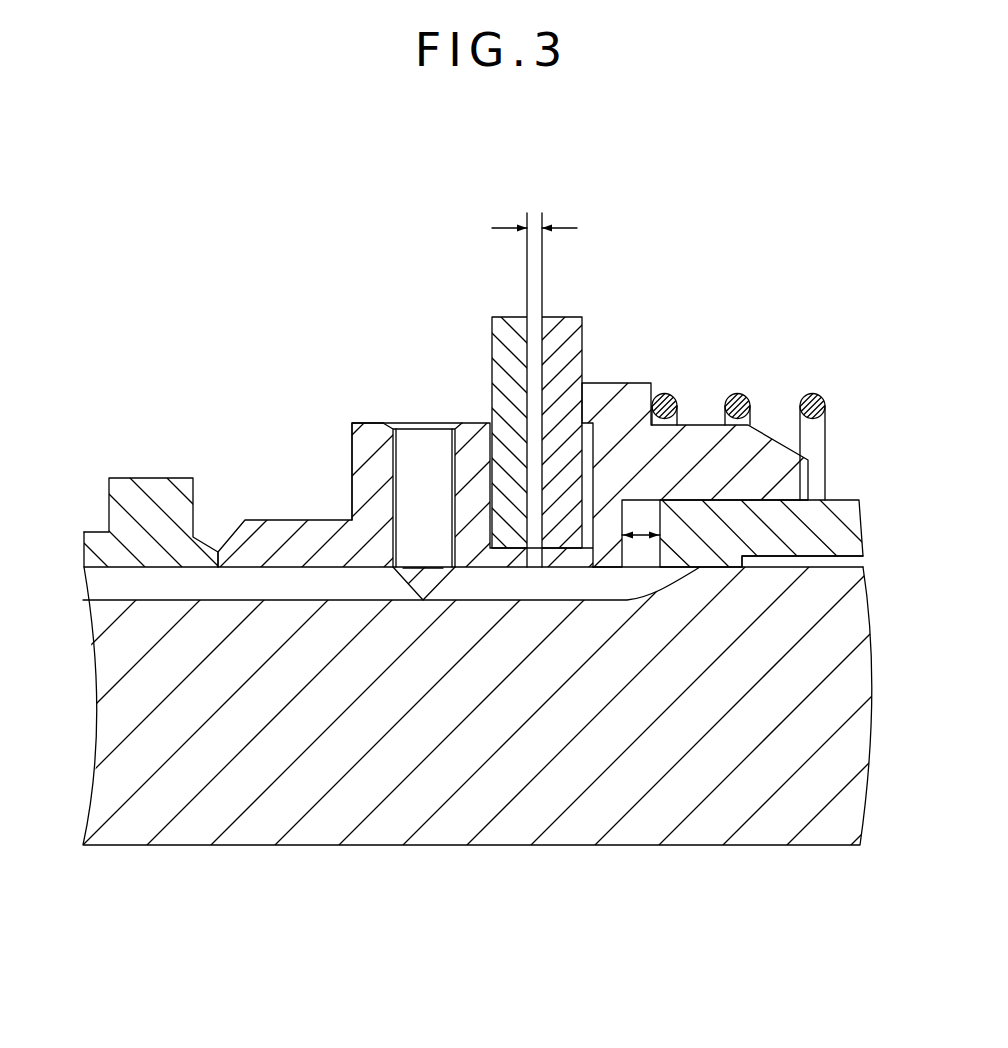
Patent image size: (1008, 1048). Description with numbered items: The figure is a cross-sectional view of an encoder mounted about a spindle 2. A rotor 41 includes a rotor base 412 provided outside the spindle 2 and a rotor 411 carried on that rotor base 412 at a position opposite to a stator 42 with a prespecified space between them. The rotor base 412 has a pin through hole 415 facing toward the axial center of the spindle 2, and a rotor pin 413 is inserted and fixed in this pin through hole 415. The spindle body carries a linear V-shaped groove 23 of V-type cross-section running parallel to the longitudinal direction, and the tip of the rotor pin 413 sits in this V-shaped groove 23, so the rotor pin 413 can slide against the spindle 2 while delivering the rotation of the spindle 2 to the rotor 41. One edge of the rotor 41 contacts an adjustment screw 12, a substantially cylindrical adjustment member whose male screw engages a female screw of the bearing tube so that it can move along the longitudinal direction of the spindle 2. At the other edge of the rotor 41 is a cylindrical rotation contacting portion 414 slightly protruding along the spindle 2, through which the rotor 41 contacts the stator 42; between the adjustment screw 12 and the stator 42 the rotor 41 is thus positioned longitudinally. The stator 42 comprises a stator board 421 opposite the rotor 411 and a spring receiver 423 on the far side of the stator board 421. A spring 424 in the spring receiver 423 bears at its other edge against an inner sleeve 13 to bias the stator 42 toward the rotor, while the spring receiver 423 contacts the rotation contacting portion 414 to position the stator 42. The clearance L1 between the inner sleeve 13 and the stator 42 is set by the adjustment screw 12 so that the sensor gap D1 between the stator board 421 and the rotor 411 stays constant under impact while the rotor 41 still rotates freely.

The spindle 2 is at (187, 846).
The V-shaped groove 23 is at (292, 600).
The adjustment screw 12 is at (108, 492).
The inner sleeve 13 is at (793, 512).
The rotor 41 is at (405, 462).
The rotor base 412 is at (352, 421).
The rotor pin 413 is at (427, 424).
The rotation contacting portion 414 is at (540, 552).
The pin through hole 415 is at (397, 473).
The stator 42 is at (667, 390).
The rotor 411 is at (504, 317).
The stator board 421 is at (559, 317).
The spring receiver 423 is at (618, 383).
The spring 424 is at (826, 397).
The sensor gap D1 is at (534, 208).
The clearance L1 is at (643, 537).